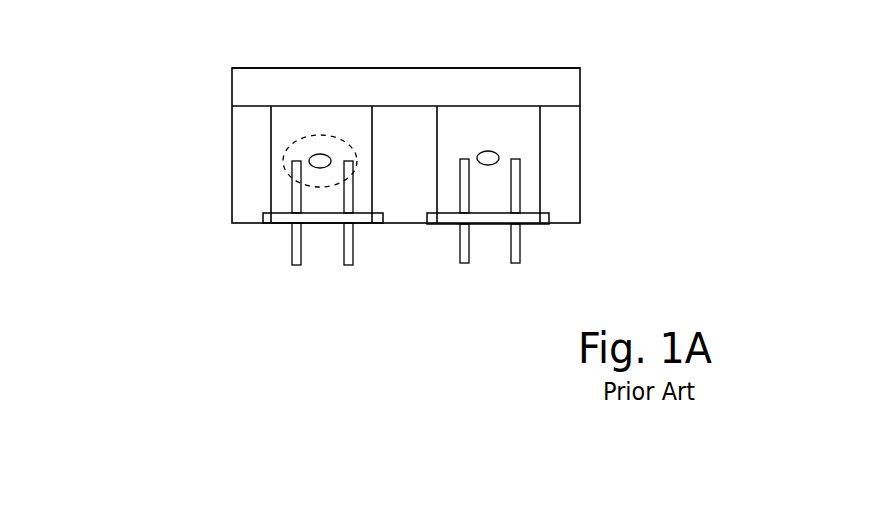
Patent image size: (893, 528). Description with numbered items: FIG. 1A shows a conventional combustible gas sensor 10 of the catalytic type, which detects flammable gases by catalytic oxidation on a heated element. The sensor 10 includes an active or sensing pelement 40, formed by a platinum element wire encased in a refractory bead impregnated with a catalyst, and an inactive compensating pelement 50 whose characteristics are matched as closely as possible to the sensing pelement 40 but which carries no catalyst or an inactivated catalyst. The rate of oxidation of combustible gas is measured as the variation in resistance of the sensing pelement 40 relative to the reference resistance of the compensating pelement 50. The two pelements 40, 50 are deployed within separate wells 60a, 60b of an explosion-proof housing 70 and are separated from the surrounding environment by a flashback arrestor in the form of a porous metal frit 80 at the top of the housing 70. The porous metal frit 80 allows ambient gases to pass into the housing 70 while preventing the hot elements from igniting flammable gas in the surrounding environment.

The combustible gas sensor 10 is at (198, 155).
The sensing pelement 40 is at (273, 149).
The compensating pelement 50 is at (468, 143).
The well 60a is at (363, 193).
The well 60b is at (530, 180).
The explosion-proof housing 70 is at (583, 134).
The porous metal frit 80 is at (238, 80).